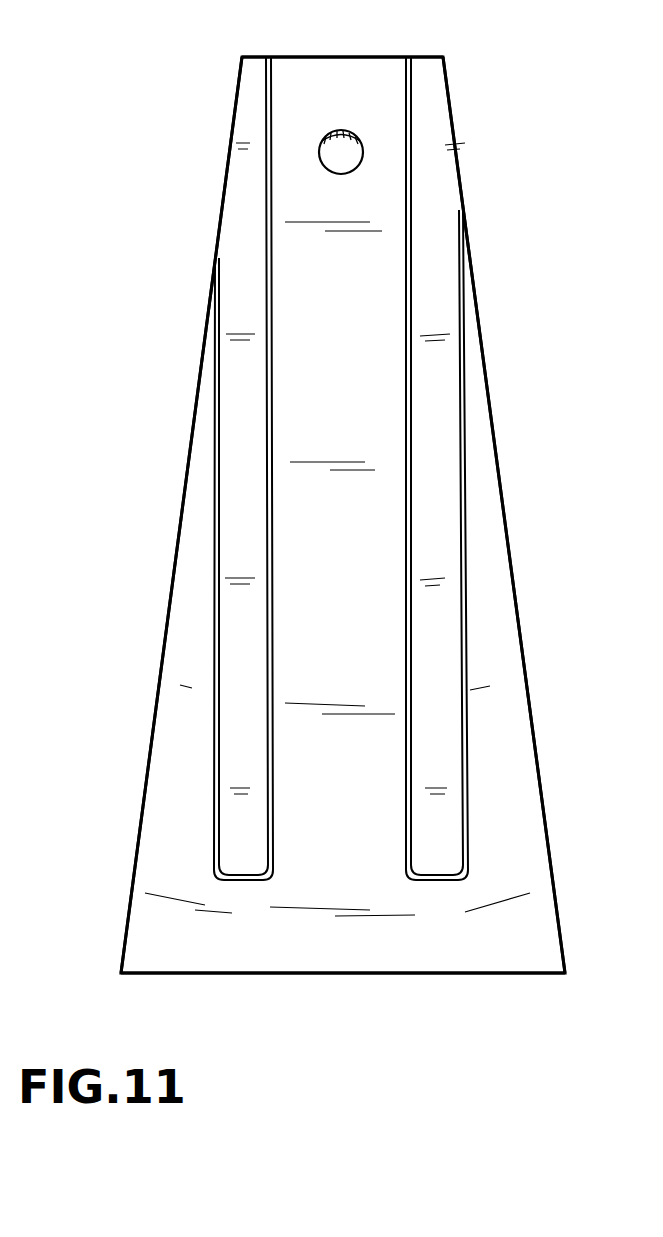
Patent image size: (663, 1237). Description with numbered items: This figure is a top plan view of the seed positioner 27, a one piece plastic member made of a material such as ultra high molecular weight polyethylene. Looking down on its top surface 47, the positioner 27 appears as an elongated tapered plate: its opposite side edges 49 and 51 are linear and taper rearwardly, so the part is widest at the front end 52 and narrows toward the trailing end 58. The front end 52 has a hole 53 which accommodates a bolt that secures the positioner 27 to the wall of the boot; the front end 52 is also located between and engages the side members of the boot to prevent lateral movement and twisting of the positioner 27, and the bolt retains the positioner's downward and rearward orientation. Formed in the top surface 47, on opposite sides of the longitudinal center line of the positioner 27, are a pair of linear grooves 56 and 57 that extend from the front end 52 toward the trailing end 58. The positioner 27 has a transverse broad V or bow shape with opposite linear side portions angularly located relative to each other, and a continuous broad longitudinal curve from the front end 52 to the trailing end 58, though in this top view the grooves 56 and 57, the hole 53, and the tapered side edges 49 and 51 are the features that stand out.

The positioner 27 is at (168, 438).
The top surface 47 is at (347, 282).
The side edge 49 is at (169, 600).
The side edge 51 is at (505, 552).
The front end 52 is at (365, 66).
The hole 53 is at (349, 150).
The groove 56 is at (247, 222).
The groove 57 is at (433, 407).
The trailing end 58 is at (360, 958).